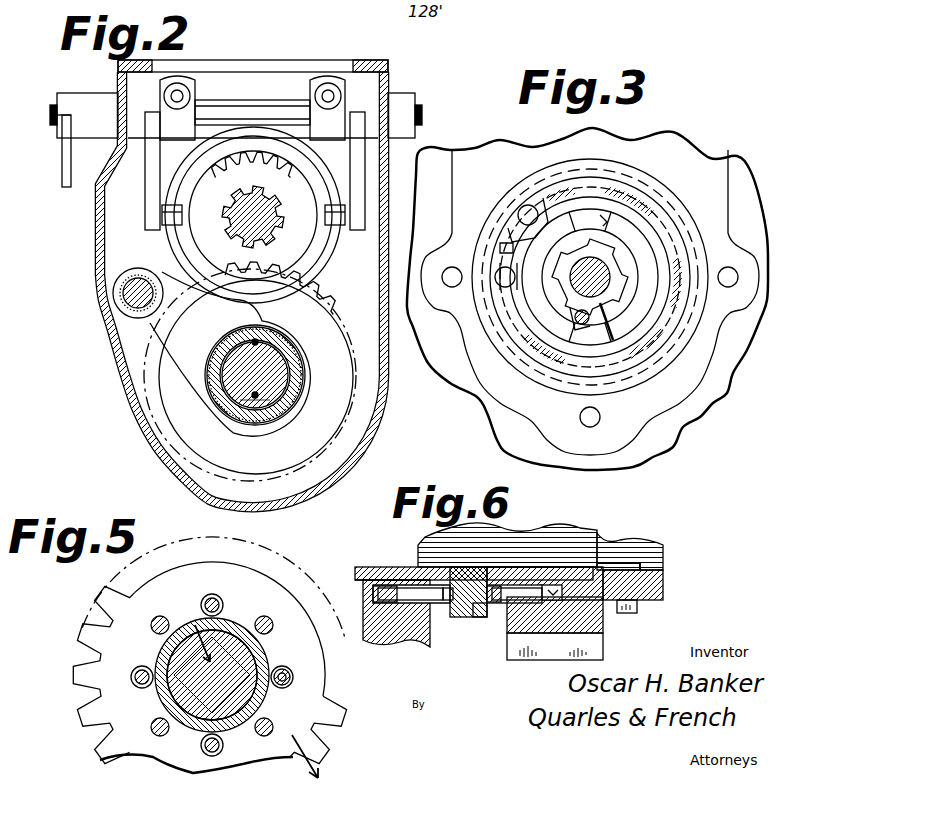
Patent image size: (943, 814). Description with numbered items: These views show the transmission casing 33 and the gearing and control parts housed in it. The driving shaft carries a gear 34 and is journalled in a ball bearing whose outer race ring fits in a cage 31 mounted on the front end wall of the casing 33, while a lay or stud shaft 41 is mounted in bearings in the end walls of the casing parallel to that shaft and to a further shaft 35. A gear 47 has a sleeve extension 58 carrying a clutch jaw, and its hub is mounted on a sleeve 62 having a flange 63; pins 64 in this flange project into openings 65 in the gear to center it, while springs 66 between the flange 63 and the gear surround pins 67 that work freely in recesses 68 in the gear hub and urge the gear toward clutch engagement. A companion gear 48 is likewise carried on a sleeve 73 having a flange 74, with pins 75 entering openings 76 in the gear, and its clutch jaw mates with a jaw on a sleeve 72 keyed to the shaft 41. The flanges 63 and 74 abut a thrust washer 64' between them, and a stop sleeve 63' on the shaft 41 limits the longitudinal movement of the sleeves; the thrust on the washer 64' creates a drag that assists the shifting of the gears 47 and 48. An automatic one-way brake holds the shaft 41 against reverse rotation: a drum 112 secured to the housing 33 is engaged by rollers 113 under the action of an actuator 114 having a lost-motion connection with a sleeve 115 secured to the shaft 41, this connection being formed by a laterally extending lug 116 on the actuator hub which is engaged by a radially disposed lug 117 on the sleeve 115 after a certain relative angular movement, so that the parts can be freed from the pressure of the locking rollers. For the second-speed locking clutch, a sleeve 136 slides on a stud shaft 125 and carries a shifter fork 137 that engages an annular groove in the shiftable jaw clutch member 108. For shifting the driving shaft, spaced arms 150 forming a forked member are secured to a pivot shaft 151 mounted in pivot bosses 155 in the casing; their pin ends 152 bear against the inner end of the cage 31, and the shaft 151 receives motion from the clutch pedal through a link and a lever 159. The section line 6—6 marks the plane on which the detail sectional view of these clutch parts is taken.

In FIG. 5, the section line 6— 6 is at (263, 705).
In FIG. 2, the cage 31 is at (192, 178).
In FIG. 2, the casing 33 is at (122, 415).
In FIG. 3, the casing 33 is at (515, 414).
In FIG. 2, the gear 34 is at (272, 252).
In FIG. 2, the shaft 35 is at (242, 220).
In FIG. 2, the lay shaft 41 is at (290, 396).
In FIG. 3, the lay shaft 41 is at (585, 278).
In FIG. 5, the lay shaft 41 is at (163, 700).
In FIG. 6, the lay shaft 41 is at (553, 535).
In FIG. 5, the gear 47 is at (118, 607).
In FIG. 6, the gear 47 is at (550, 640).
In FIG. 6, the gear 48 is at (400, 606).
In FIG. 6, the sleeve extension 58 is at (668, 588).
In FIG. 5, the sleeve 62 is at (183, 625).
In FIG. 6, the sleeve 62 is at (604, 625).
In FIG. 6, the flange 63 is at (482, 629).
In FIG. 6, the stop sleeve 63' is at (630, 536).
In FIG. 5, the pins 64 is at (230, 676).
In FIG. 6, the pins 64 is at (512, 637).
In FIG. 6, the thrust washer 64' is at (430, 638).
In FIG. 5, the openings 65 is at (270, 624).
In FIG. 6, the openings 65 is at (567, 563).
In FIG. 5, the springs 66 is at (290, 680).
In FIG. 5, the pins 67 is at (283, 690).
In FIG. 5, the recesses 68 is at (287, 667).
In FIG. 6, the recesses 68 is at (368, 634).
In FIG. 2, the sleeve 72 is at (285, 368).
In FIG. 6, the sleeve 73 is at (388, 568).
In FIG. 6, the flange 74 is at (452, 618).
In FIG. 6, the pins 75 is at (418, 603).
In FIG. 6, the openings 76 is at (365, 588).
In FIG. 2, the shiftable jaw clutch member 108 is at (272, 418).
In FIG. 3, the drum 112 is at (650, 197).
In FIG. 3, the rollers 113 is at (528, 214).
In FIG. 3, the actuator 114 is at (510, 248).
In FIG. 3, the sleeve 115 is at (622, 300).
In FIG. 3, the lug 116 is at (607, 218).
In FIG. 3, the lug 117 is at (605, 333).
In FIG. 2, the stud shaft 125 is at (125, 290).
In FIG. 2, the sleeve 136 is at (122, 308).
In FIG. 2, the shifter fork 137 is at (232, 300).
In FIG. 2, the arms 150 is at (145, 165).
In FIG. 2, the pivot shaft 151 is at (228, 113).
In FIG. 2, the pin ends 152 is at (165, 214).
In FIG. 2, the pivot bosses 155 is at (108, 97).
In FIG. 2, the lever 159 is at (62, 168).